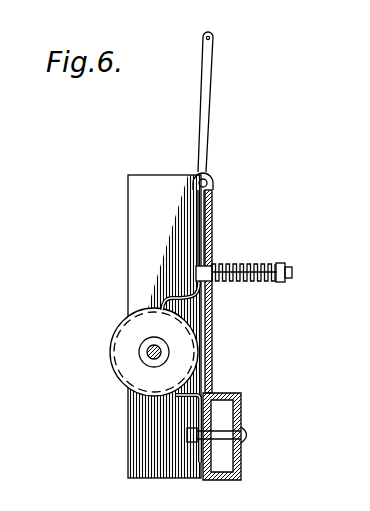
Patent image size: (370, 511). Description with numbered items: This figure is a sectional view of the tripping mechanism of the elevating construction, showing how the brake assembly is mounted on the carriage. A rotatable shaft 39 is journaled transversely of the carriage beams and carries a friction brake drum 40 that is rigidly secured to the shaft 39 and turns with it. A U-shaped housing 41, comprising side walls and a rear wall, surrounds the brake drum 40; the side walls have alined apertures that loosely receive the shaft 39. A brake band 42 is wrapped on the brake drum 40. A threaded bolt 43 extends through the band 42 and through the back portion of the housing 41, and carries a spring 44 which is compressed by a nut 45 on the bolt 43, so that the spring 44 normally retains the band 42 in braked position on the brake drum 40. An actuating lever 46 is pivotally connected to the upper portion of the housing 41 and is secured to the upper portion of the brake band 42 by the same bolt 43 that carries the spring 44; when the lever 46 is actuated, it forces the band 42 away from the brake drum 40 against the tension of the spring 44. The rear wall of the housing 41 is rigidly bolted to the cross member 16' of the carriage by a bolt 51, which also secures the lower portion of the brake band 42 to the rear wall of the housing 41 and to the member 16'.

The carriage cross member 16' is at (256, 335).
The rotatable shaft 39 is at (148, 353).
The friction brake drum 40 is at (112, 342).
The U-shaped housing 41 is at (129, 250).
The brake band 42 is at (162, 296).
The threaded bolt 43 is at (291, 270).
The spring 44 is at (250, 262).
The nut 45 is at (256, 246).
The actuating lever 46 is at (213, 60).
The bolt 51 is at (241, 413).